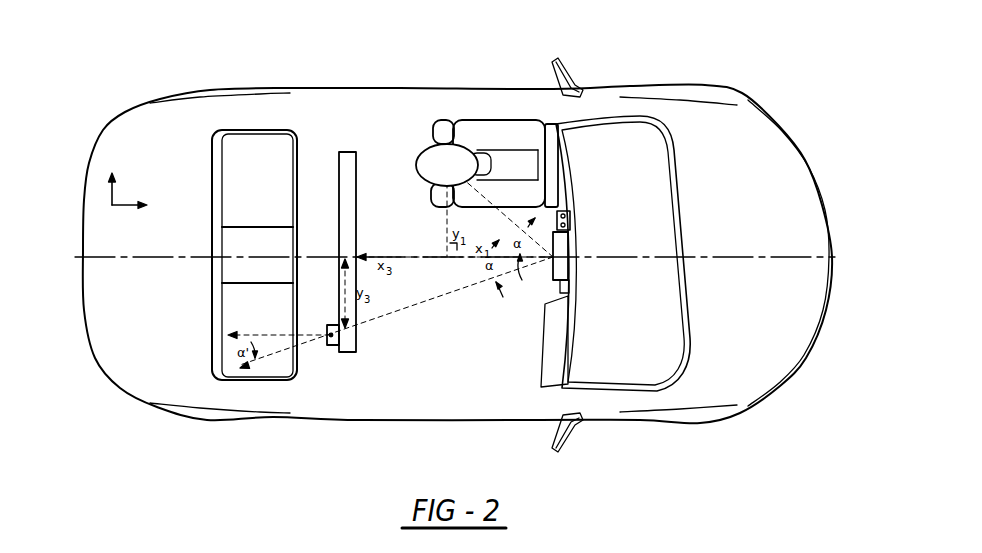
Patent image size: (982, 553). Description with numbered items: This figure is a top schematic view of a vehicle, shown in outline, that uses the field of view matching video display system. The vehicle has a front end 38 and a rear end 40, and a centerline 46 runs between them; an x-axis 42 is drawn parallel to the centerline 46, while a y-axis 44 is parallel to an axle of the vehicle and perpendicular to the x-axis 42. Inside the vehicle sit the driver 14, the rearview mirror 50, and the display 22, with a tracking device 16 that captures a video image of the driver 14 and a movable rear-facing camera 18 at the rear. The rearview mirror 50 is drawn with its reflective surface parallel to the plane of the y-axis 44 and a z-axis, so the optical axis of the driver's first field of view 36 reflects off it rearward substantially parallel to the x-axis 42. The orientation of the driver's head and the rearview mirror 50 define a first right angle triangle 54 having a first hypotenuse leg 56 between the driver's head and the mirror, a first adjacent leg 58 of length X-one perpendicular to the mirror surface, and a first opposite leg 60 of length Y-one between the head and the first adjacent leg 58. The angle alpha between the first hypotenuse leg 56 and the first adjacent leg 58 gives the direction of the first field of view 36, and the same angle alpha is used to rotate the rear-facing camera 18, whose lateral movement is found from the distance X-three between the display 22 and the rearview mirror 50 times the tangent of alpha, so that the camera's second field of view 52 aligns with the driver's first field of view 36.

The driver 14 is at (433, 143).
The tracking device 16 is at (571, 222).
The rear-facing camera 18 is at (331, 336).
The display 22 is at (343, 150).
The first field of view 36 is at (505, 200).
The front end 38 is at (814, 170).
The rear end 40 is at (91, 164).
The x-axis 42 is at (127, 206).
The y-axis 44 is at (111, 198).
The centerline 46 is at (120, 258).
The rearview mirror 50 is at (560, 267).
The second field of view 52 is at (259, 366).
The first right angle triangle 54 is at (487, 218).
The first hypotenuse leg 56 is at (484, 197).
The first adjacent leg 58 is at (468, 253).
The first opposite leg 60 is at (447, 223).